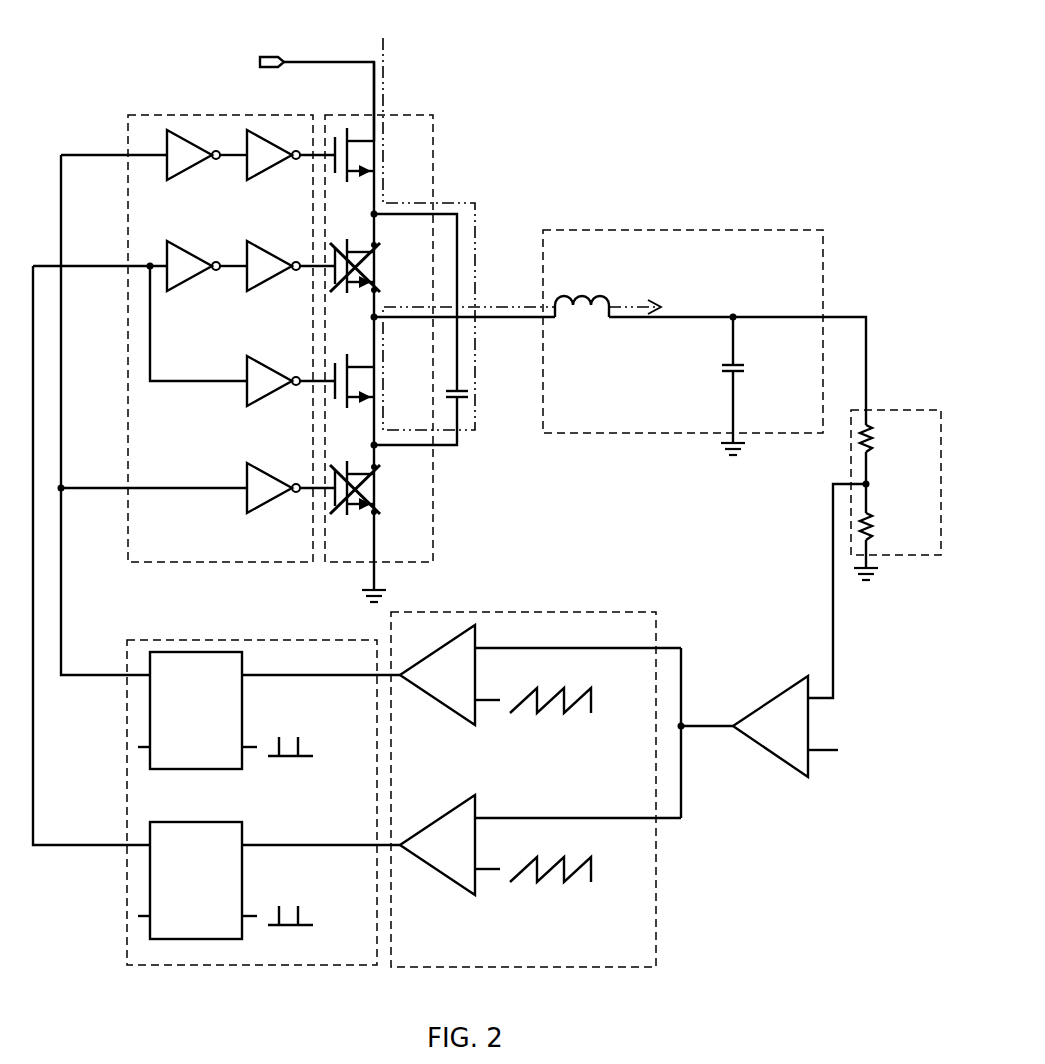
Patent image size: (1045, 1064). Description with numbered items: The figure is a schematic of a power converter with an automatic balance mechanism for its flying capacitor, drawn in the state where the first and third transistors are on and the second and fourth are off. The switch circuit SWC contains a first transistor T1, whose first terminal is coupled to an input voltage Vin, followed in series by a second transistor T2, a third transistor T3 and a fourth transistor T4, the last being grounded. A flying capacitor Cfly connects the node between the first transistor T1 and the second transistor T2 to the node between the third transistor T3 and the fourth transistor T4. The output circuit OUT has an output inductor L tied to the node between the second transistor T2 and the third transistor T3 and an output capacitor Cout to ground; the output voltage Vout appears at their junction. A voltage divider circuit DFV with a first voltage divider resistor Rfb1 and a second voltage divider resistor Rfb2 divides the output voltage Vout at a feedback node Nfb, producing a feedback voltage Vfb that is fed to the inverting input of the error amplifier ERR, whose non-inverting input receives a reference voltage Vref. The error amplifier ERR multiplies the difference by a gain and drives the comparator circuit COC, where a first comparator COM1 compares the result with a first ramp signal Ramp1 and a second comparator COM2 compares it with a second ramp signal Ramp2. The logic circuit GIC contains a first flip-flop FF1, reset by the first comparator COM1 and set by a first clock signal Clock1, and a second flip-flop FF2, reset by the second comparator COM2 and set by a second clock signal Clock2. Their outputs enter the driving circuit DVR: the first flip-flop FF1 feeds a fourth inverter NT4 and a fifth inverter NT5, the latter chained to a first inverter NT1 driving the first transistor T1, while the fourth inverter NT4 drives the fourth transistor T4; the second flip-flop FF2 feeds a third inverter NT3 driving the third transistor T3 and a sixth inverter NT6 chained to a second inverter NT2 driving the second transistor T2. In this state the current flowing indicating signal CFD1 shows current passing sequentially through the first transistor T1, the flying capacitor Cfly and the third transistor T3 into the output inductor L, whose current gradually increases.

The input voltage Vin is at (311, 83).
The current flowing indicating signal CFD1 is at (504, 218).
The driving circuit DVR is at (220, 115).
The switch circuit SWC is at (408, 115).
The first transistor T1 is at (379, 155).
The second transistor T2 is at (371, 266).
The third transistor T3 is at (379, 381).
The fourth transistor T4 is at (371, 488).
The first inverter NT1 is at (291, 174).
The second inverter NT2 is at (291, 284).
The third inverter NT3 is at (242, 354).
The fourth inverter NT4 is at (197, 507).
The fifth inverter NT5 is at (154, 174).
The sixth inverter NT6 is at (140, 284).
The flying capacitor Cfly is at (450, 330).
The output circuit OUT is at (667, 230).
The output inductor L is at (552, 290).
The output voltage Vout is at (784, 353).
The output capacitor Cout is at (765, 386).
The voltage divider circuit DFV is at (900, 410).
The first voltage divider resistor Rfb1 is at (897, 441).
The feedback node Nfb is at (864, 575).
The second voltage divider resistor Rfb2 is at (894, 546).
The error amplifier ERR is at (768, 756).
The feedback voltage Vfb is at (861, 691).
The reference voltage Vref is at (851, 751).
The comparator circuit COC is at (528, 612).
The first comparator COM1 is at (436, 702).
The second comparator COM2 is at (436, 872).
The first ramp signal Ramp1 is at (557, 717).
The second ramp signal Ramp2 is at (557, 888).
The logic circuit GIC is at (127, 887).
The first flip-flop FF1 is at (242, 697).
The second flip-flop FF2 is at (242, 867).
The first clock signal Clock1 is at (301, 766).
The second clock signal Clock2 is at (301, 936).